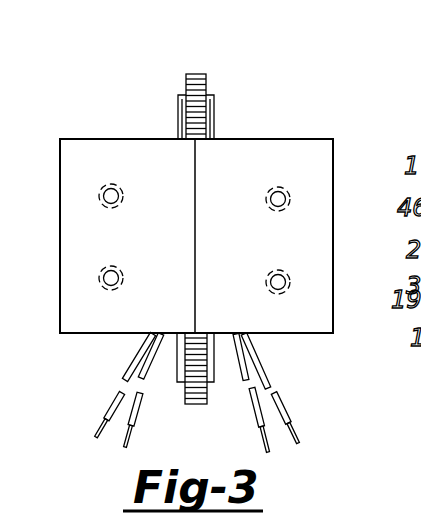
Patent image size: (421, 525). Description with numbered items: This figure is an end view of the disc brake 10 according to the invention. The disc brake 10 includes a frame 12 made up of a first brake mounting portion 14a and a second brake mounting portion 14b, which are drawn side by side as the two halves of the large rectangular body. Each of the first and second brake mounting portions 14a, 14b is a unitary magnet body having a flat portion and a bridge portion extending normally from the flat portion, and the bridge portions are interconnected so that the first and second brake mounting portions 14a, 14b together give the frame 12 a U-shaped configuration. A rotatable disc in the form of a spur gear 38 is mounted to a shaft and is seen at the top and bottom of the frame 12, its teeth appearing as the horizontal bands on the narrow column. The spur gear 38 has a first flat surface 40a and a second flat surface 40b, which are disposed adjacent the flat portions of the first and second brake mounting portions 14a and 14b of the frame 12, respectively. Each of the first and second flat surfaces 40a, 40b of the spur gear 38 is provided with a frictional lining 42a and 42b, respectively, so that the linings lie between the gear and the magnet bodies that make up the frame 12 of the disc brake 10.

The disc brake 10 is at (352, 103).
The frame 12 is at (282, 135).
The first brake mounting portion 14a is at (170, 253).
The second brake mounting portion 14b is at (255, 260).
The spur gear 38 is at (198, 82).
The first flat surface 40a is at (178, 107).
The second flat surface 40b is at (214, 100).
The frictional lining 42a is at (178, 128).
The frictional lining 42b is at (214, 125).